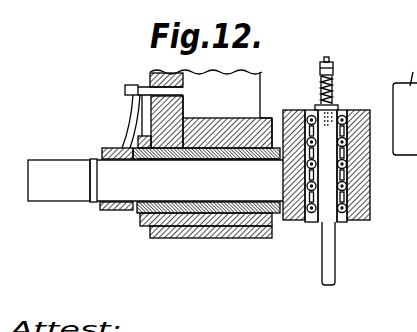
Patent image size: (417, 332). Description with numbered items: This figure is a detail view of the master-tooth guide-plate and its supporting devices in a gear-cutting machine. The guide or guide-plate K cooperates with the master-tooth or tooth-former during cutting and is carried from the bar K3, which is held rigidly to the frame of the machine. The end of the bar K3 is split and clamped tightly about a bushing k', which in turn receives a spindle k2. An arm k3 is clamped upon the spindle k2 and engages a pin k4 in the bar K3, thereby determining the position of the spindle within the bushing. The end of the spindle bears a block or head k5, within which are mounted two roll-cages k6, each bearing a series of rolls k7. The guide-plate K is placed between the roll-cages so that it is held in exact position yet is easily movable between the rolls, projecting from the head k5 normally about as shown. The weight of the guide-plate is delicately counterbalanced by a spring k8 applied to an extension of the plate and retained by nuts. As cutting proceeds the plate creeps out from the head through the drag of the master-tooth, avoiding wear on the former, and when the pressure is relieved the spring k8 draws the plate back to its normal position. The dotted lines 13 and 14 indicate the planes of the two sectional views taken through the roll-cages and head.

The bar K3 is at (206, 114).
The pin k4 is at (147, 88).
The arm k3 is at (128, 125).
The spindle k2 is at (155, 180).
The bushing k' is at (190, 239).
The block k5 is at (361, 114).
The roll-cages k6 is at (303, 221).
The rolls k7 is at (309, 143).
The spring k8 is at (320, 89).
The guide-plate K is at (328, 267).
The section line 13 13 is at (345, 108).
The section line 14 14 is at (280, 126).